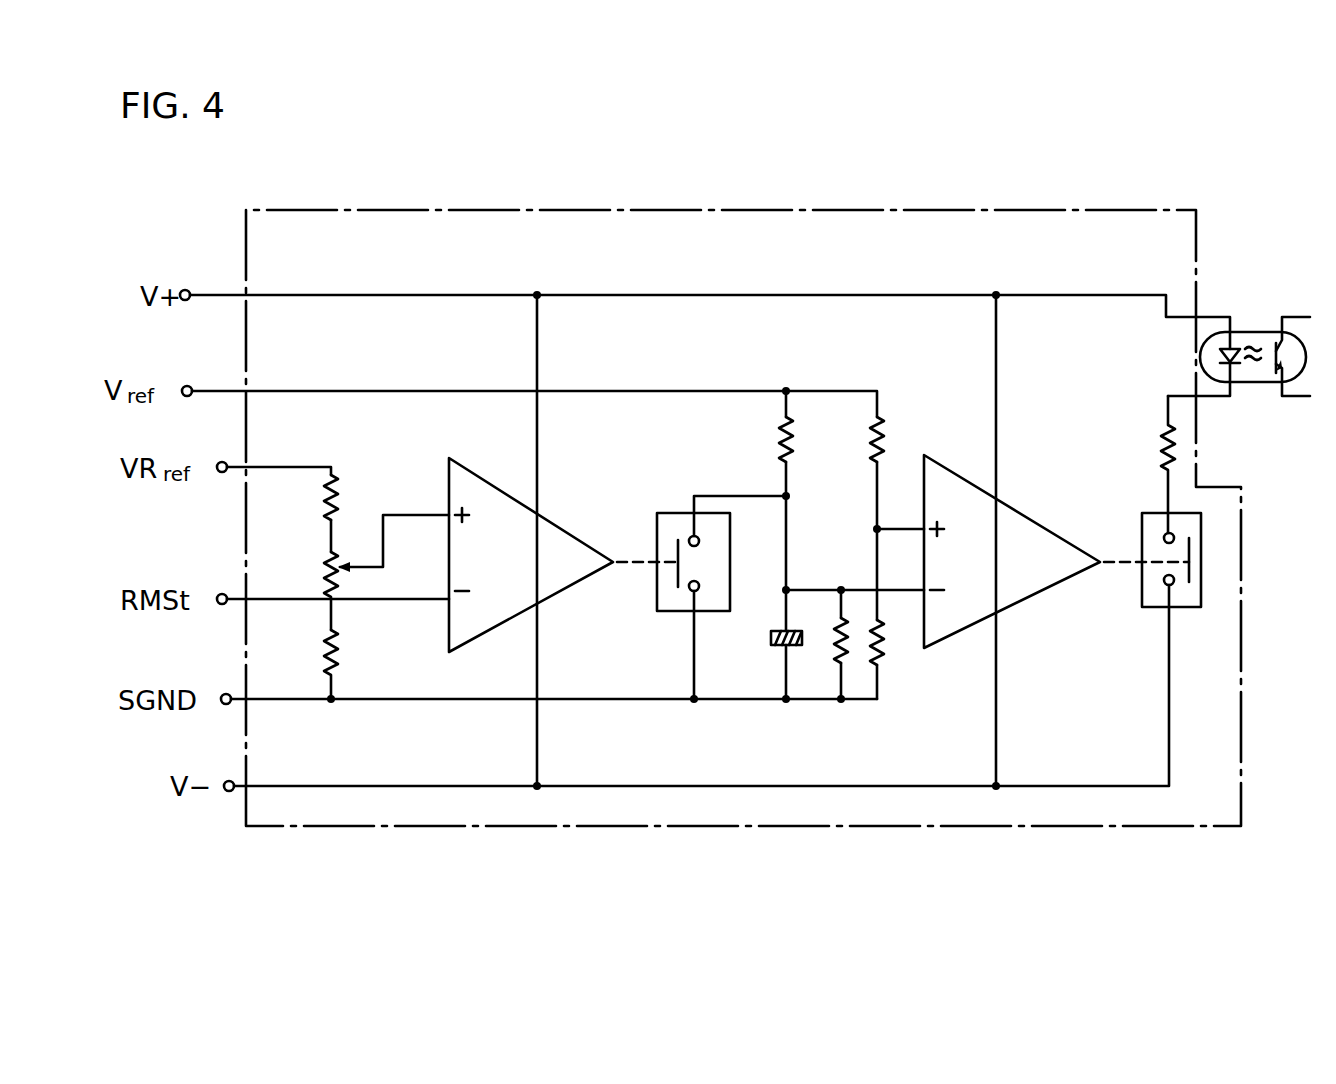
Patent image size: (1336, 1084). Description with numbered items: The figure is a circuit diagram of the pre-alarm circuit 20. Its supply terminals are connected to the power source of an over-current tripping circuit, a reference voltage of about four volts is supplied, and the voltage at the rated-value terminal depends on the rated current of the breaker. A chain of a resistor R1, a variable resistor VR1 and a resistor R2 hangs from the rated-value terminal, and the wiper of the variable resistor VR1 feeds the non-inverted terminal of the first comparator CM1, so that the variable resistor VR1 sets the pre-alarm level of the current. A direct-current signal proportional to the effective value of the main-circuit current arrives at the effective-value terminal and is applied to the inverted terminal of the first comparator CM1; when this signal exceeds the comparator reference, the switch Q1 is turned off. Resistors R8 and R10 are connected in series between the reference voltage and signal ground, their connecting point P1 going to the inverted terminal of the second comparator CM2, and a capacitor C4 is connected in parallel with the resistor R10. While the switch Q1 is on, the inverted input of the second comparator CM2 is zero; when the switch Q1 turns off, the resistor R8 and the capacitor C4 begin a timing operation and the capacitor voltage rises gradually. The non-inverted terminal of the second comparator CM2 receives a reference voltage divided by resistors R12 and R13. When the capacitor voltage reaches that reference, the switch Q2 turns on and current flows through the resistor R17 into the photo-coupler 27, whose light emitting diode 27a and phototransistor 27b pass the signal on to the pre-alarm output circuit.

The pre-alarm circuit 20 is at (930, 245).
The resistor R1 is at (336, 500).
The variable resistor VR1 is at (323, 573).
The resistor R2 is at (325, 661).
The first comparator CM1 is at (483, 473).
The switch Q1 is at (653, 539).
The resistor R8 is at (786, 450).
The point P1 is at (788, 590).
The capacitor C4 is at (776, 645).
The resistor R10 is at (838, 647).
The resistor R12 is at (879, 449).
The resistor R13 is at (885, 647).
The second comparator CM2 is at (1028, 600).
The switch Q2 is at (1200, 608).
The resistor R17 is at (1166, 445).
The photo-coupler 27 is at (1209, 362).
The light emitting diode of photo-coupler 27a is at (1207, 362).
The phototransistor of photo-coupler 27b is at (1268, 344).